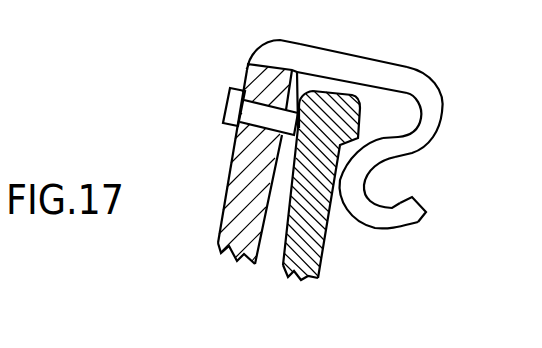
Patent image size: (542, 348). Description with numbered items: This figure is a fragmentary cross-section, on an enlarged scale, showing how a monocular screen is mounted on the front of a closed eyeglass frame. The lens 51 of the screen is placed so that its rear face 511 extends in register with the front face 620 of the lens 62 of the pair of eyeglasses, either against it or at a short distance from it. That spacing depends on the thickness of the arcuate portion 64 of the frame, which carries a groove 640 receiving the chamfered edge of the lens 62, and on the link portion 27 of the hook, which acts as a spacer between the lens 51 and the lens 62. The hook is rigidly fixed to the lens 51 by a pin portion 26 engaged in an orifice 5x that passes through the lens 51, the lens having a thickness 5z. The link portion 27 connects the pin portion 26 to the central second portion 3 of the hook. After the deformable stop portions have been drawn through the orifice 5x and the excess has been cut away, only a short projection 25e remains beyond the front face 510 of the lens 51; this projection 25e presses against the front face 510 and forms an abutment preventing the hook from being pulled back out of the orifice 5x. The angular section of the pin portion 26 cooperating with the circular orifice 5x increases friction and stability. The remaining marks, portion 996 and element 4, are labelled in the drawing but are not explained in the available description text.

The rail 5z is at (10, 7).
The sheet metal wall 996 is at (290, 53).
The slot 27 is at (300, 100).
The holding plate 3 is at (375, 62).
The hook portion 64 is at (333, 133).
The spring clip 4 is at (441, 131).
The contact bend 640 is at (345, 186).
The end notch 62 is at (338, 138).
The clamping block 620 is at (330, 247).
The block foot 511 is at (318, 277).
The block foot 51 is at (233, 250).
The mounting block 510 is at (218, 211).
The block body 5x is at (262, 132).
The pin 26 is at (236, 135).
The pin head 25e is at (231, 96).